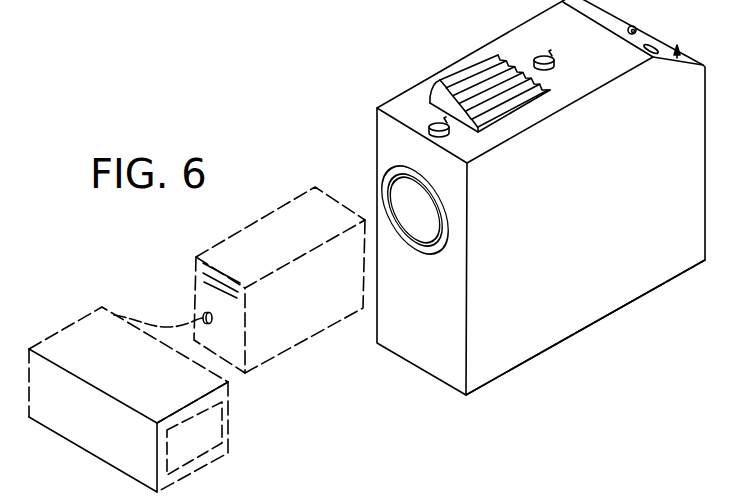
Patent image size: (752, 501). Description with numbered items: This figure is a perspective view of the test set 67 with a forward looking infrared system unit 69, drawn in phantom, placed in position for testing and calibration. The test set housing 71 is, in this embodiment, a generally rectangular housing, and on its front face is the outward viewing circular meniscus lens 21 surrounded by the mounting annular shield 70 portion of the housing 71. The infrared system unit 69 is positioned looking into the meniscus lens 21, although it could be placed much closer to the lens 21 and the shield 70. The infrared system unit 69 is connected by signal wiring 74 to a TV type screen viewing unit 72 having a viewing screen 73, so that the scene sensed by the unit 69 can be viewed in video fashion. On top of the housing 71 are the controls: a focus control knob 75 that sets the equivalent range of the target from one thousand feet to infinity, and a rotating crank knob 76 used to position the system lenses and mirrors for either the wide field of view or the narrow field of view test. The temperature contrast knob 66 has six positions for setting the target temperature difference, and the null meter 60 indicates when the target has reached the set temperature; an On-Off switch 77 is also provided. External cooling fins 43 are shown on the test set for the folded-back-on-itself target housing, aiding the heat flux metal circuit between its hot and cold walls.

The meniscus lens 21 is at (413, 217).
The external cooling fins 43 is at (458, 73).
The null meter 60 is at (658, 47).
The temperature contrast knob 66 is at (637, 28).
The test set 67 is at (618, 302).
The forward looking infrared system unit 69 is at (275, 358).
The mounting annular shield 70 is at (385, 183).
The test set housing 71 is at (535, 355).
The TV type screen viewing unit 72 is at (52, 433).
The viewing screen 73 is at (205, 457).
The signal wiring 74 is at (135, 314).
The focus control knob 75 is at (430, 128).
The rotating crank knob 76 is at (537, 57).
The On-Off switch 77 is at (683, 48).